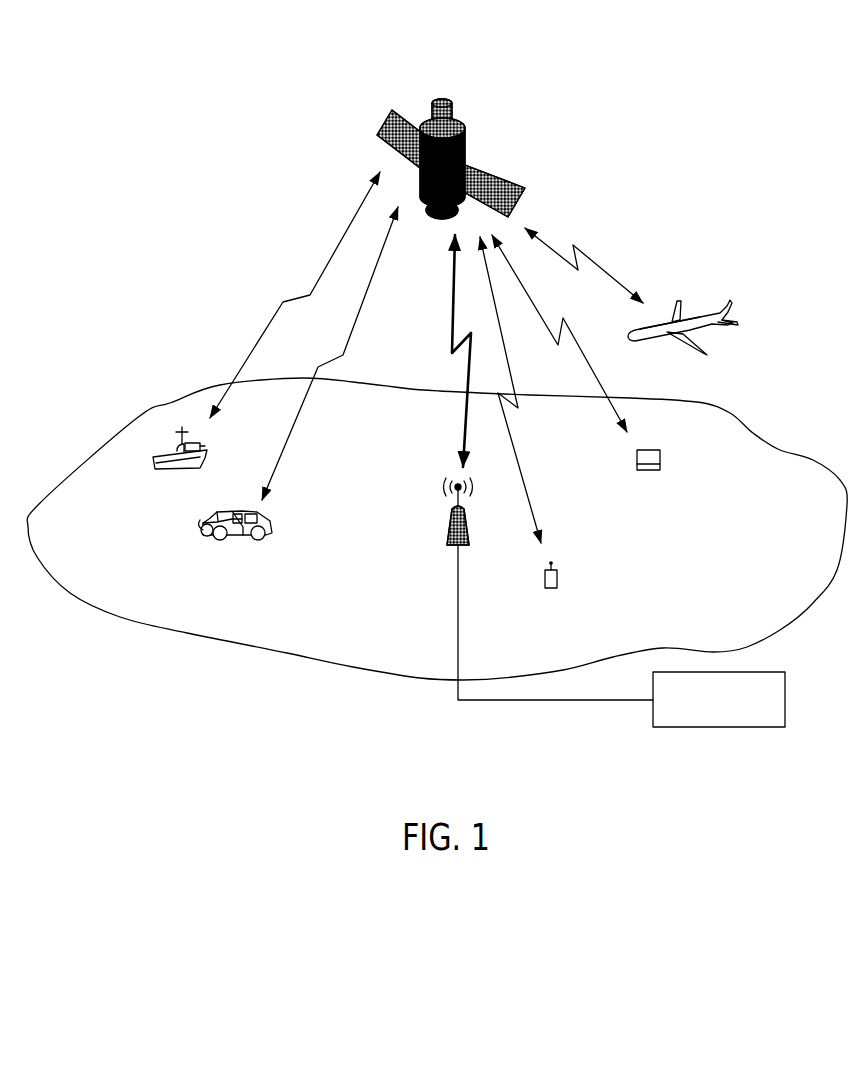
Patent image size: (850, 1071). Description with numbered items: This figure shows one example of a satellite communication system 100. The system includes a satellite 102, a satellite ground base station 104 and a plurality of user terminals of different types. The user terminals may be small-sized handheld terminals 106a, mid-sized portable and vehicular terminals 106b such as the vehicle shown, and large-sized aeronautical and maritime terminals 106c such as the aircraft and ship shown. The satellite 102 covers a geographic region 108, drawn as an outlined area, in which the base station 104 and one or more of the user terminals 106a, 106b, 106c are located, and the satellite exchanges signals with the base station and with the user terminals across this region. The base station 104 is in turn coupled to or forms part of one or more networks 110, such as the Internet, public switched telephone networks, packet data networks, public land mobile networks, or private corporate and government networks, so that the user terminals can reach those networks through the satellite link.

The satellite communication system 100 is at (225, 128).
The satellite 102 is at (487, 163).
The satellite ground base station 104 is at (450, 522).
The small-sized handheld terminal 106a is at (558, 576).
The mid-sized portable and vehicular terminal 106b is at (238, 540).
The large-sized aeronautical and maritime terminal 106c is at (177, 473).
The geographic region 108 is at (183, 398).
The network 110 is at (720, 728).